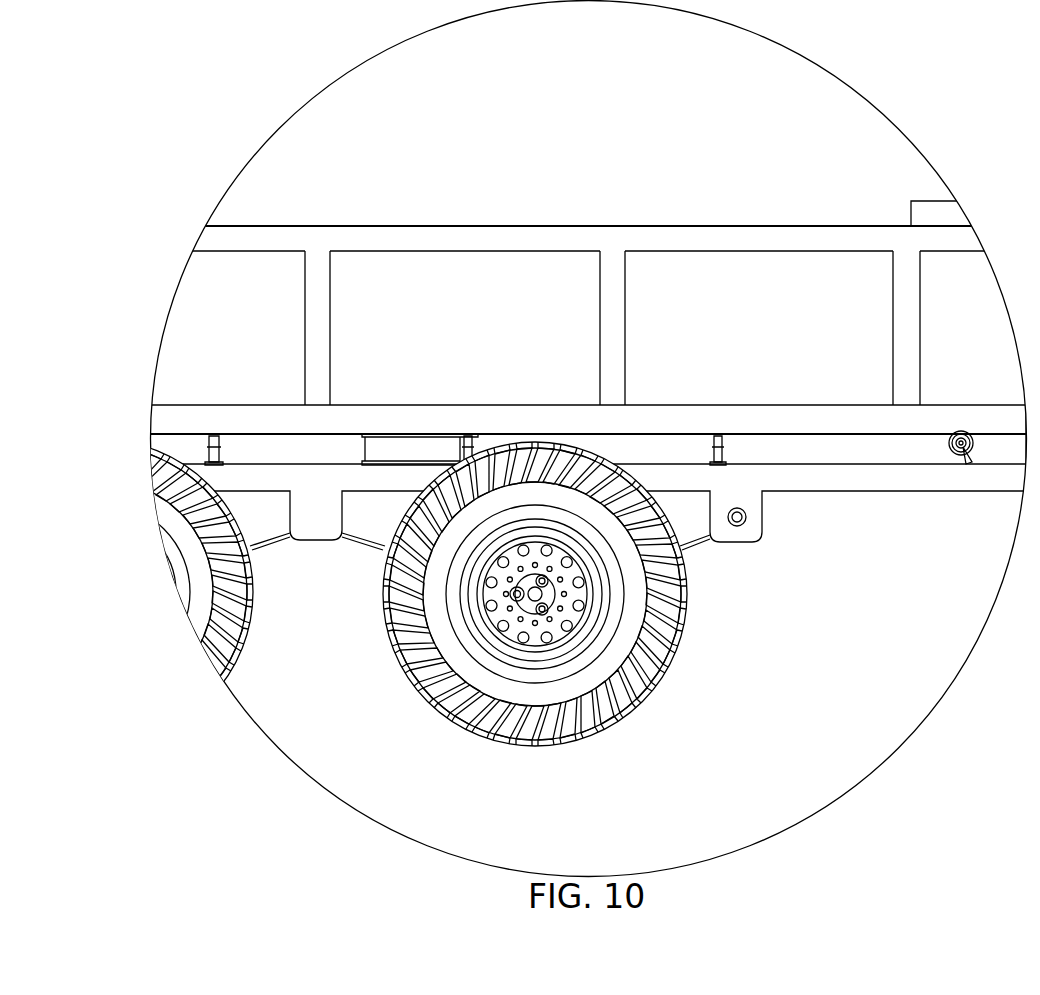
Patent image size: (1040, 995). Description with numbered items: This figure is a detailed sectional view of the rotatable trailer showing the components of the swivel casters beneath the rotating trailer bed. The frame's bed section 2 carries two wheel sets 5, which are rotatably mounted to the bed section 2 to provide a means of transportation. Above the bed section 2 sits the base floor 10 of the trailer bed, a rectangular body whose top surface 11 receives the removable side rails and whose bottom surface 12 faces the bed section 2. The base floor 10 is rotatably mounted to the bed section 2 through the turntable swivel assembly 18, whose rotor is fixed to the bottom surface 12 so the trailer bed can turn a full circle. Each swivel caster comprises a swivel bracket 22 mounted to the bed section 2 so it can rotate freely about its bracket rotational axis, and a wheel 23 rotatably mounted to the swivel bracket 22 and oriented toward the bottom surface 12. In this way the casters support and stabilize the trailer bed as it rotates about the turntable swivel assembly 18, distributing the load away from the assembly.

The bed section 2 is at (879, 487).
The wheel sets 5 is at (686, 682).
The base floor 10 is at (528, 407).
The top surface 11 is at (356, 405).
The bottom surface 12 is at (852, 436).
The turntable swivel assembly 18 is at (408, 440).
The swivel bracket 22 is at (207, 456).
The wheel 23 is at (214, 434).